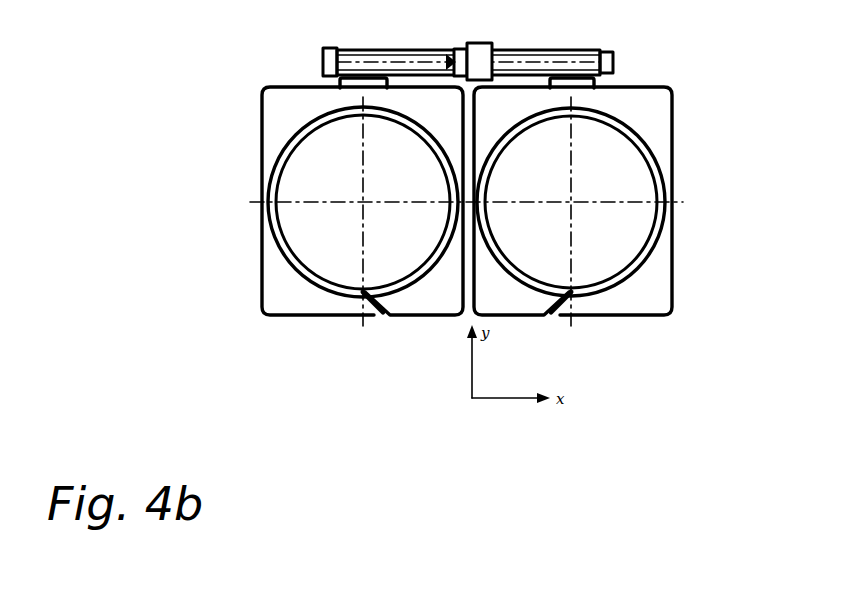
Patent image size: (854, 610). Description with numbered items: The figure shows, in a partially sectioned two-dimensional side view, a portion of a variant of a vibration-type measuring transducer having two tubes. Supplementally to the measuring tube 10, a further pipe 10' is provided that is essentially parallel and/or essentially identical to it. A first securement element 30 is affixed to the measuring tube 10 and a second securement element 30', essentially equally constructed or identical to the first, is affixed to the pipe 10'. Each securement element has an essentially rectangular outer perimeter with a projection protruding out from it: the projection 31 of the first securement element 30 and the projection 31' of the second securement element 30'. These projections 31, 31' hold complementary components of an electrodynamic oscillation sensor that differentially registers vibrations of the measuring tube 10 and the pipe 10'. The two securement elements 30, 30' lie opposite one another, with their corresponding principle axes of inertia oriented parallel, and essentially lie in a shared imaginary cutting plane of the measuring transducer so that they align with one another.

The measuring tube 10 is at (285, 202).
The pipe 10' is at (623, 202).
The first securement element 30 is at (310, 215).
The second securement element 30' is at (609, 209).
The projection 31 is at (271, 66).
The projection 31' is at (639, 66).